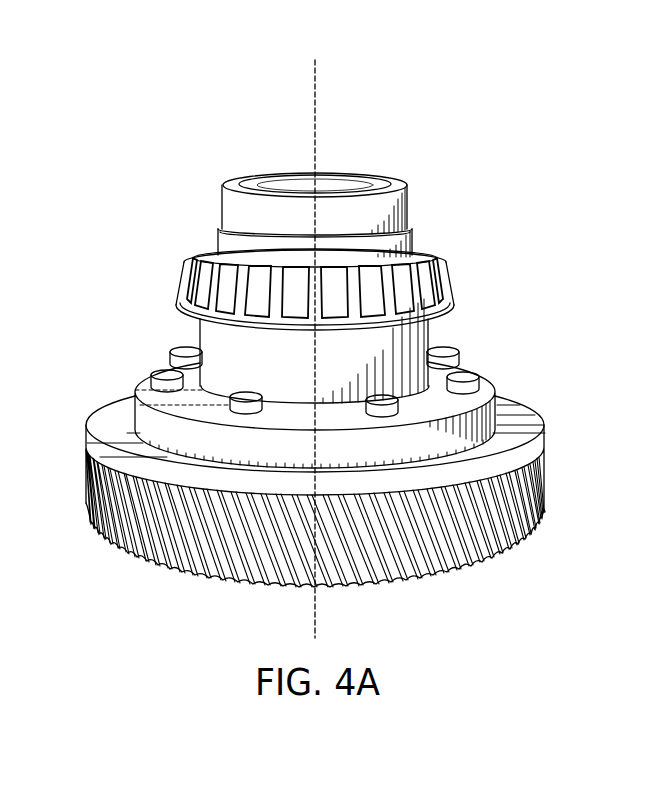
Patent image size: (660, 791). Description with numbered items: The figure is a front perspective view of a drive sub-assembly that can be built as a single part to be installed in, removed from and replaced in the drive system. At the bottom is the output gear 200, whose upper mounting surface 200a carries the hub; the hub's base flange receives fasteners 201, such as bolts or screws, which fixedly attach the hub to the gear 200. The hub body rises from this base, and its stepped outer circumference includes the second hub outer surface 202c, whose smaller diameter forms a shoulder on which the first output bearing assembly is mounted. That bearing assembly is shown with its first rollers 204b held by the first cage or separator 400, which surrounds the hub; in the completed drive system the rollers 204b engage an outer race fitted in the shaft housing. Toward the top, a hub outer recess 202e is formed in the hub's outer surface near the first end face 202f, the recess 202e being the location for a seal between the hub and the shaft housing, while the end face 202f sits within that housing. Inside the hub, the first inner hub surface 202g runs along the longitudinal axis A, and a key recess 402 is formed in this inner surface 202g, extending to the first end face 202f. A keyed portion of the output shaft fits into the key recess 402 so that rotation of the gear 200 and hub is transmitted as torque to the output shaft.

The longitudinal axis A is at (317, 83).
The output gear 200 is at (556, 446).
The mounting surface 200a is at (520, 422).
The fasteners 201 is at (447, 348).
The second hub outer surface 202c is at (413, 242).
The hub outer recess 202e is at (410, 202).
The first end face 202f is at (345, 176).
The first inner hub surface 202g is at (268, 182).
The first rollers 204b is at (178, 288).
The first cage or separator 400 is at (208, 252).
The key recess 402 is at (399, 186).